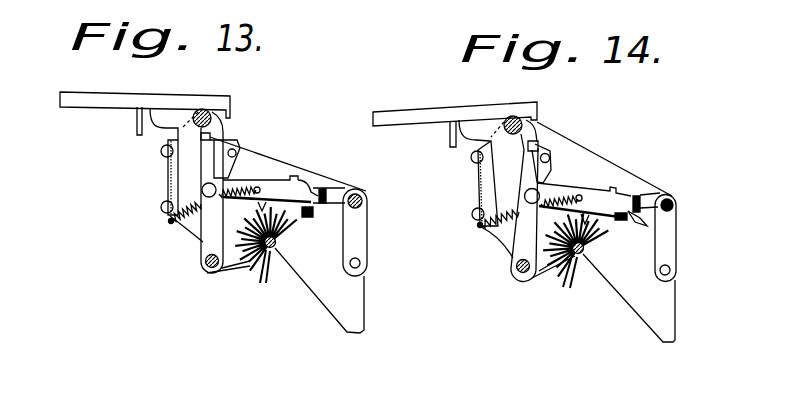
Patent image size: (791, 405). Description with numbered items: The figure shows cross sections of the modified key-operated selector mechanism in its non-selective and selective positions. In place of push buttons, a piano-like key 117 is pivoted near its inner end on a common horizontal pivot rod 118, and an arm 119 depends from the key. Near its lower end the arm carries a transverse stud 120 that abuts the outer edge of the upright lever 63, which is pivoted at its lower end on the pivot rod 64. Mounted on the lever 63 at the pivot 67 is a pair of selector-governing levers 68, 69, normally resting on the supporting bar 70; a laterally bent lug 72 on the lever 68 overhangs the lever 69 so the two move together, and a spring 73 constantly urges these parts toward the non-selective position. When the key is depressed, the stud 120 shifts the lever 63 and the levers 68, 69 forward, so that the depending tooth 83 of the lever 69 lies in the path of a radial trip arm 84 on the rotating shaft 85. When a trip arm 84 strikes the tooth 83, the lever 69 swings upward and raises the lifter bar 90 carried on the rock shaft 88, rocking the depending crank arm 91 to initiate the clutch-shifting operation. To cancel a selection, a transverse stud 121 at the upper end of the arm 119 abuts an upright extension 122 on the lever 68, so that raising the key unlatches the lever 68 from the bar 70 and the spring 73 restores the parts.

In FIG. 13, the piano-like key 117 is at (74, 97).
In FIG. 14, the piano-like key 117 is at (455, 111).
In FIG. 13, the horizontal pivot rod 118 is at (212, 110).
In FIG. 14, the horizontal pivot rod 118 is at (512, 116).
In FIG. 13, the depending key-arm 119 is at (187, 157).
In FIG. 14, the depending key-arm 119 is at (505, 163).
In FIG. 13, the transverse stud 120 is at (172, 201).
In FIG. 13, the transverse stud 121 is at (235, 152).
In FIG. 14, the transverse stud 121 is at (550, 156).
In FIG. 13, the upright extension 122 is at (207, 139).
In FIG. 14, the upright extension 122 is at (535, 144).
In FIG. 13, the vertically-swinging lever 63 is at (201, 238).
In FIG. 14, the vertically-swinging lever 63 is at (519, 249).
In FIG. 13, the pivot rod 64 is at (208, 274).
In FIG. 13, the pivot 67 is at (202, 189).
In FIG. 14, the pivot 67 is at (532, 196).
In FIG. 13, the selector-governing lever 68 is at (278, 188).
In FIG. 14, the selector-governing lever 68 is at (596, 203).
In FIG. 13, the selector-governing lever 69 is at (310, 186).
In FIG. 13, the supporting bar 70 is at (314, 215).
In FIG. 14, the laterally bent lug 72 is at (615, 190).
In FIG. 13, the spring 73 is at (176, 218).
In FIG. 14, the spring 73 is at (492, 224).
In FIG. 14, the depending tooth 83 is at (585, 214).
In FIG. 13, the radial trip arm 84 is at (261, 284).
In FIG. 14, the radial trip arm 84 is at (563, 285).
In FIG. 13, the horizontal shaft 85 is at (275, 262).
In FIG. 14, the horizontal shaft 85 is at (589, 264).
In FIG. 14, the rock shaft 88 is at (680, 198).
In FIG. 13, the lifter bar 90 is at (323, 208).
In FIG. 14, the lifter bar 90 is at (401, 221).
In FIG. 13, the depending crank arm 91 is at (360, 250).
In FIG. 14, the depending crank arm 91 is at (674, 248).